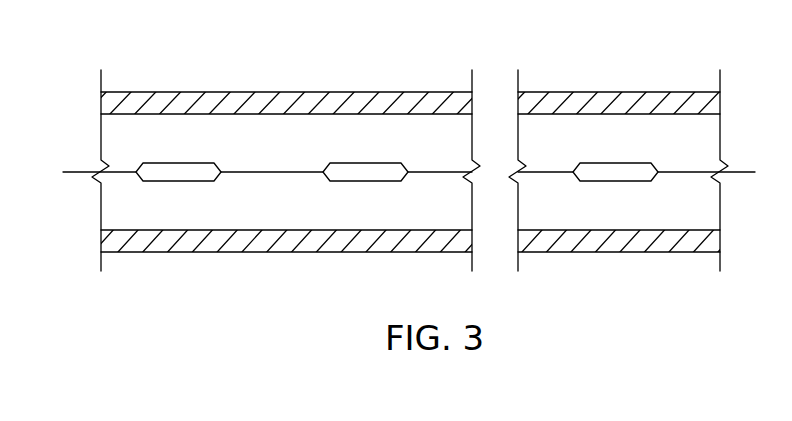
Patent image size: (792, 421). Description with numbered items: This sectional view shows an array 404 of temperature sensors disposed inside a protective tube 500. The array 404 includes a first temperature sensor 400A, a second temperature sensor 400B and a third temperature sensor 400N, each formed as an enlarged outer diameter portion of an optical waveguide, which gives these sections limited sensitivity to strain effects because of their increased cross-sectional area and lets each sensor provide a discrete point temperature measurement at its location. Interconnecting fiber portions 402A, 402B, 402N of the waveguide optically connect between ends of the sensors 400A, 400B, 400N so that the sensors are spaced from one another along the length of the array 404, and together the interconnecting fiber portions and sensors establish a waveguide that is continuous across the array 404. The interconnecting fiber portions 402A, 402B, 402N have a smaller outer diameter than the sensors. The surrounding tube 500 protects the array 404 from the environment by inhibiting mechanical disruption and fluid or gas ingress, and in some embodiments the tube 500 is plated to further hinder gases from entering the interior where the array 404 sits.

The protective tube 500 is at (377, 91).
The first temperature sensor 400A is at (166, 163).
The second temperature sensor 400B is at (362, 163).
The third temperature sensor 400N is at (604, 163).
The interconnecting fiber portion 402A is at (272, 172).
The interconnecting fiber portion 402B is at (443, 172).
The interconnecting fiber portion 402N is at (690, 172).
The array of temperature sensors 404 is at (267, 136).